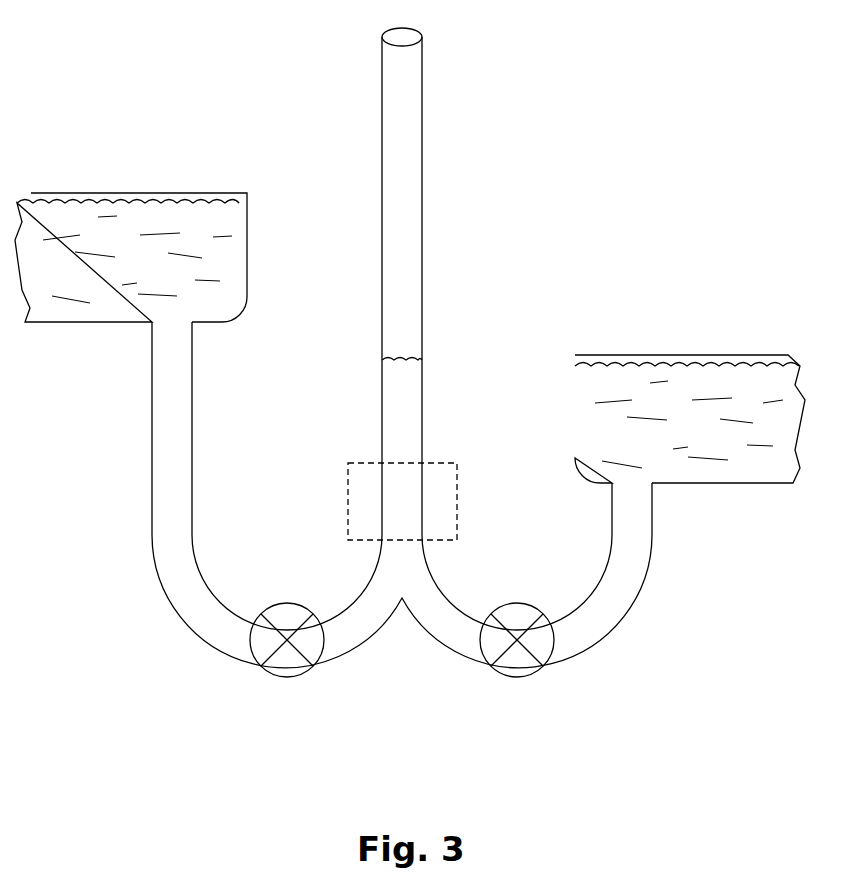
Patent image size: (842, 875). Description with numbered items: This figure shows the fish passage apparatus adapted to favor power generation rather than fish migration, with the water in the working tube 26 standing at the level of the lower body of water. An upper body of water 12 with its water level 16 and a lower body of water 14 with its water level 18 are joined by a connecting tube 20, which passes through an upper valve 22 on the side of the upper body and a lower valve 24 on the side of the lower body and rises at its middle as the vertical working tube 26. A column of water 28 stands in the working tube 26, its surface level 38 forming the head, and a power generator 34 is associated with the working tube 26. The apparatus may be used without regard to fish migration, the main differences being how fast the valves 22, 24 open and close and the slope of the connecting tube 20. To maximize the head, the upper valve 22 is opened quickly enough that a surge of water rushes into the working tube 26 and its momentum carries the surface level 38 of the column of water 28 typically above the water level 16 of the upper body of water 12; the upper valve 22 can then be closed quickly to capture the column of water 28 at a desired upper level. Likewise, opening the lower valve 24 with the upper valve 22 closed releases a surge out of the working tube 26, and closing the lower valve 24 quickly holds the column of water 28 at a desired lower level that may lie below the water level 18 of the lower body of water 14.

The upper body of water 12 is at (67, 215).
The lower body of water 14 is at (633, 382).
The water level of the upper body of water 16 is at (185, 207).
The water level of the lower body of water 18 is at (750, 368).
The connecting tube 20 is at (357, 633).
The upper valve 22 is at (280, 665).
The lower valve 24 is at (523, 663).
The working tube 26 is at (423, 121).
The column of water 28 is at (395, 417).
The power generator 34 is at (345, 500).
The surface level of the column of water 38 is at (418, 357).